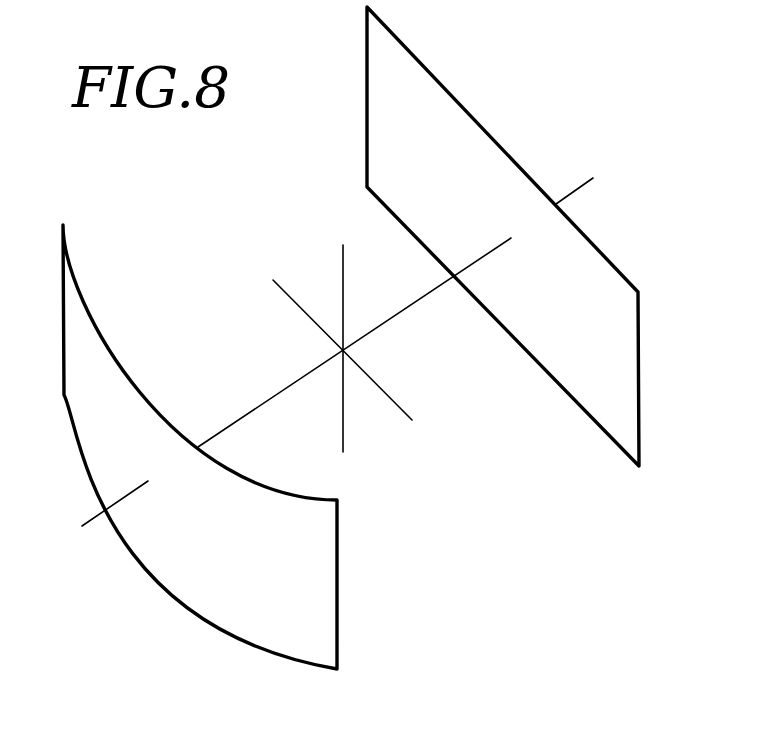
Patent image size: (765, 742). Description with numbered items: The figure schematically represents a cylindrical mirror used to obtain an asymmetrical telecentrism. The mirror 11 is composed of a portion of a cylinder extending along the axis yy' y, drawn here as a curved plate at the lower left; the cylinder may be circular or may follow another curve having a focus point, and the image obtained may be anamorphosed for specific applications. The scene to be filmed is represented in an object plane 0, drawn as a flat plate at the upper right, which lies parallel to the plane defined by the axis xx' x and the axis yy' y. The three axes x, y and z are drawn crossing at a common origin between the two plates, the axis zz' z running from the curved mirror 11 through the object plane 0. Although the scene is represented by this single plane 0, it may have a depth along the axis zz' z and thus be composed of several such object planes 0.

The object plane 0 is at (620, 367).
The mirror 11 is at (323, 600).
The xx' axis x is at (341, 354).
The yy' axis y is at (345, 348).
The zz' axis z is at (339, 349).